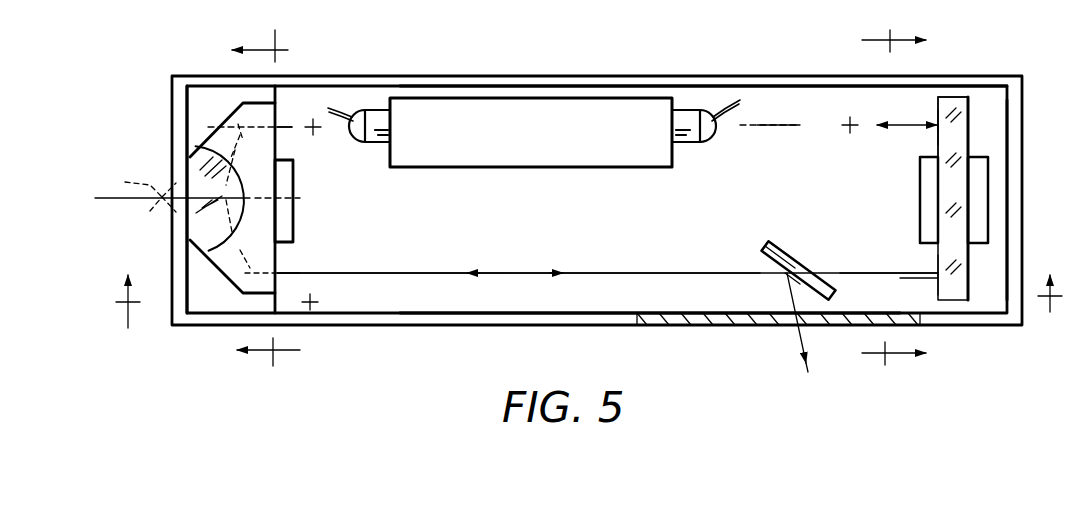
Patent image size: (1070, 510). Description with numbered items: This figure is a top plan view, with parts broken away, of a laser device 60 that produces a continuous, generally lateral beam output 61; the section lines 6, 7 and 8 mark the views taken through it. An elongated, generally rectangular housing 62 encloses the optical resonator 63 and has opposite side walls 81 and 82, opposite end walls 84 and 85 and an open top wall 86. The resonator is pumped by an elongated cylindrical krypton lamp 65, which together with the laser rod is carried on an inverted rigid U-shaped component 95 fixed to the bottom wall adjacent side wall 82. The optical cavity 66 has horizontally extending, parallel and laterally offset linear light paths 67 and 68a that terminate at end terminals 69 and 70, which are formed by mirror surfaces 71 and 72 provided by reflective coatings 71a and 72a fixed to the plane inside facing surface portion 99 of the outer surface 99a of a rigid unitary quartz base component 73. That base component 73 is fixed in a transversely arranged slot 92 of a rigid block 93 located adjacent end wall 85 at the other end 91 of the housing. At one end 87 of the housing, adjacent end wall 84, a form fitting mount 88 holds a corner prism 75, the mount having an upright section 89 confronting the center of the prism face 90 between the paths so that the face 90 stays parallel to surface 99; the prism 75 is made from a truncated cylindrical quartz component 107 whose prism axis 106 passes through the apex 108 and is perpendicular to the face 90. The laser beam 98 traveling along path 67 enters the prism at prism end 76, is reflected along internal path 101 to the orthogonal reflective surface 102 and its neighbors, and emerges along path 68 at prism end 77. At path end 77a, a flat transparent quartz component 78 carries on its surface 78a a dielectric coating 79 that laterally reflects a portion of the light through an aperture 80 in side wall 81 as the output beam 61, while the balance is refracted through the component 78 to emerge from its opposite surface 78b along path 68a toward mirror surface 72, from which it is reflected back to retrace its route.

The section line 6- 6 is at (585, 303).
The section line 7- 7 is at (894, 199).
The section line 8- 8 is at (266, 203).
The laser device 60 is at (440, 76).
The continuous beam output 61 is at (808, 352).
The housing 62 is at (550, 86).
The optical resonator 63 is at (968, 112).
The krypton lamp 65 is at (682, 142).
The optical cavity 66 is at (771, 125).
The light path 67 is at (786, 125).
The light path 68 is at (407, 272).
The light path 68a is at (887, 261).
The end terminal 69 is at (936, 128).
The end terminal 70 is at (935, 268).
The mirror surface 71 is at (936, 120).
The mirror coating 71a is at (936, 120).
The mirror surface 72 is at (936, 282).
The mirror coating 72a is at (912, 279).
The quartz base component 73 is at (962, 270).
The corner prism 75 is at (240, 108).
The prism end 76 is at (255, 138).
The prism end 77 is at (238, 290).
The path end 77a is at (786, 274).
The quartz component 78 is at (782, 250).
The coated surface 78a is at (762, 253).
The opposite surface 78b is at (770, 244).
The dielectric coating 79 is at (780, 263).
The aperture 80 is at (786, 325).
The side wall 81 is at (562, 325).
The side wall 82 is at (680, 86).
The end wall 84 is at (172, 240).
The end wall 85 is at (1022, 222).
The open top wall 86 is at (356, 76).
The housing end 87 is at (172, 158).
The form fitting mount 88 is at (278, 285).
The upright section 89 is at (296, 212).
The prism face 90 is at (293, 138).
The housing end 91 is at (1007, 190).
The slot 92 is at (920, 192).
The rigid block 93 is at (920, 224).
The U-shaped component 95 is at (542, 167).
The laser beam 98 is at (757, 125).
The inside facing surface portion 99 is at (935, 150).
The outer surface 99a is at (968, 112).
The light path 101 is at (232, 155).
The reflective surface 102 is at (230, 240).
The prism axis 106 is at (129, 184).
The cylindrical quartz component 107 is at (243, 302).
The apex 108 is at (150, 208).